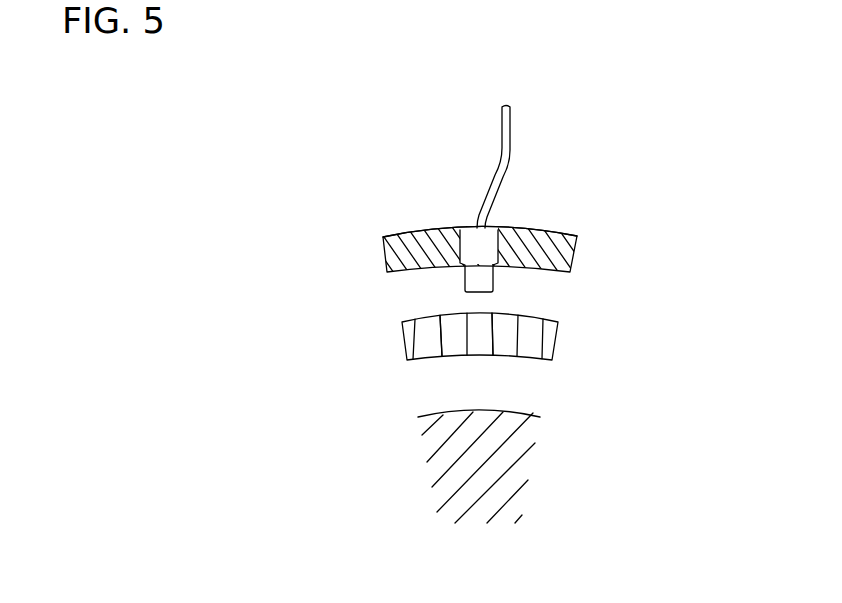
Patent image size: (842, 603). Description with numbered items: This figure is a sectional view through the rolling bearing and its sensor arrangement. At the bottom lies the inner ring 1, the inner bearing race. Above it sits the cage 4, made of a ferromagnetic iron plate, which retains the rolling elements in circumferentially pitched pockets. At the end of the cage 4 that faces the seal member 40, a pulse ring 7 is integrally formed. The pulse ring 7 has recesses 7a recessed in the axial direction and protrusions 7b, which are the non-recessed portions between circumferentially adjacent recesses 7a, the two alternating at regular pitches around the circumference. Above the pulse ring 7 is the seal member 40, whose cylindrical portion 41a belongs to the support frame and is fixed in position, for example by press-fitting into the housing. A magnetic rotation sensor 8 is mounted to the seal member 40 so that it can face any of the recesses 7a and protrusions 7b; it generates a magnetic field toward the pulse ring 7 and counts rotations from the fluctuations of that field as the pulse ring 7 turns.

The inner ring 1 is at (512, 465).
The cage 4 is at (393, 315).
The pulse ring 7 is at (558, 331).
The recesses 7a is at (452, 332).
The protrusions 7b is at (485, 348).
The magnetic rotation sensor 8 is at (467, 253).
The seal member 40 is at (546, 216).
The cylindrical portion 41a is at (563, 253).